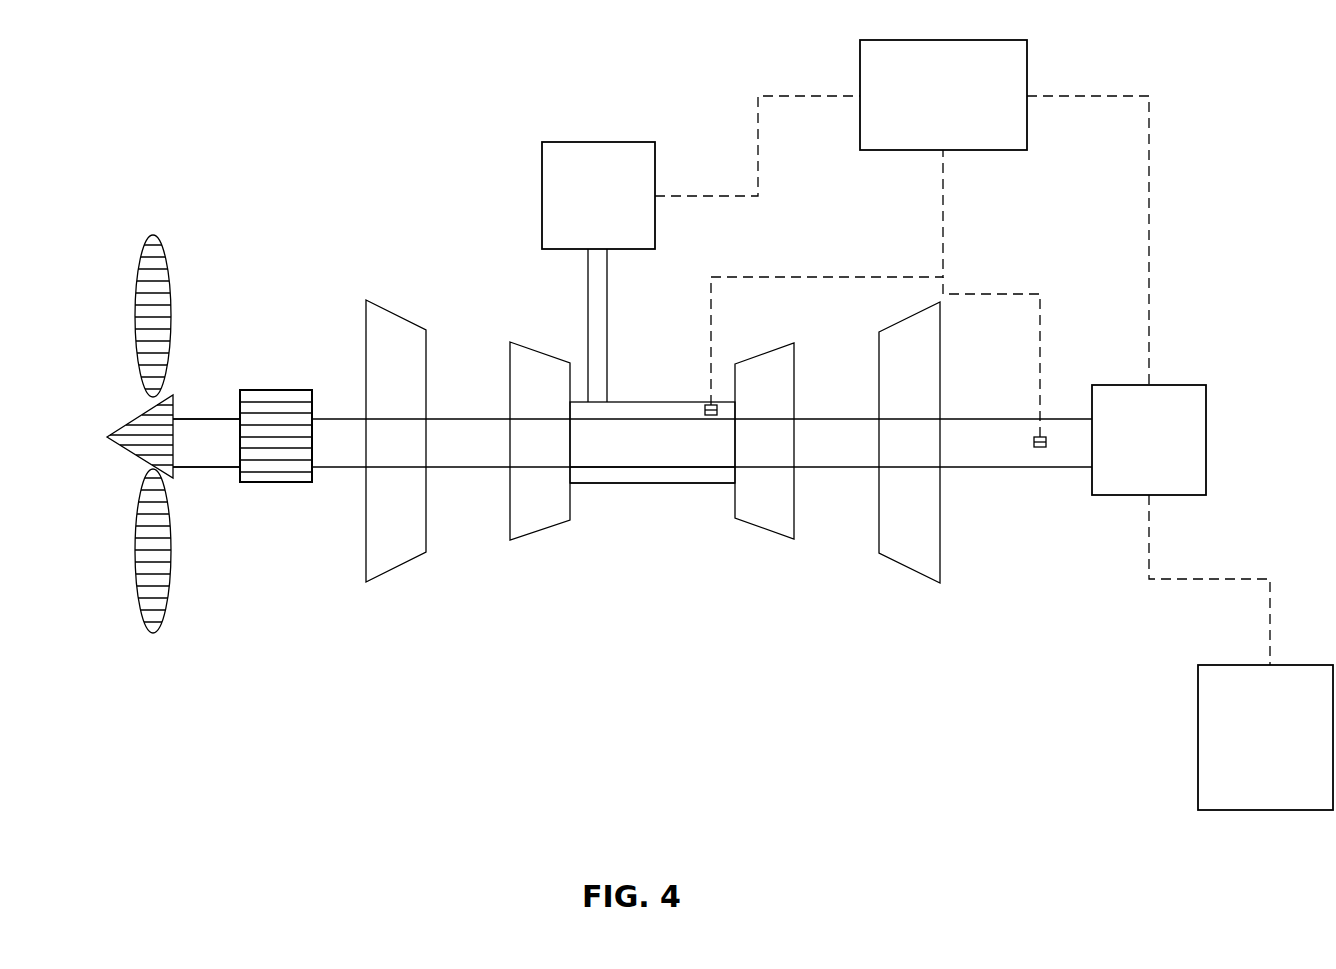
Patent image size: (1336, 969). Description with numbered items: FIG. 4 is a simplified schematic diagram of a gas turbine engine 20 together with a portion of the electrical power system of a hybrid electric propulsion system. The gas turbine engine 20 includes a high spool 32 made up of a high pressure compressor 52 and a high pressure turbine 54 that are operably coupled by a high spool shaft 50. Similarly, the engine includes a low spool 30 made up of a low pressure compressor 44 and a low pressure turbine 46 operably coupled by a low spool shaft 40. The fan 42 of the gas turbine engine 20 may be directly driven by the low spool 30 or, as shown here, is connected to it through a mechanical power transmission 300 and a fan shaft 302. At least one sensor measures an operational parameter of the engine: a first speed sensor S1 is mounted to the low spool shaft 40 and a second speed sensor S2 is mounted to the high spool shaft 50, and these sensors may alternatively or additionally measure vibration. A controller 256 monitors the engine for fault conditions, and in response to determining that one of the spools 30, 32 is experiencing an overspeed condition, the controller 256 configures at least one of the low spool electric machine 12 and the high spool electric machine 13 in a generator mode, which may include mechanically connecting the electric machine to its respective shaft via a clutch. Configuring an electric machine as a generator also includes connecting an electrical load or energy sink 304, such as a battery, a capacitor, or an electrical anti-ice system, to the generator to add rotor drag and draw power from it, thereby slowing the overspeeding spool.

The gas turbine engine 20 is at (128, 72).
The fan 42 is at (148, 312).
The fan shaft 302 is at (222, 435).
The mechanical power transmission 300 is at (285, 468).
The low pressure compressor 44 is at (383, 343).
The high pressure compressor 52 is at (528, 375).
The low spool 30 is at (470, 560).
The high spool 32 is at (583, 535).
The low spool shaft 40 is at (660, 450).
The high spool shaft 50 is at (683, 472).
The high pressure turbine 54 is at (778, 517).
The low pressure turbine 46 is at (910, 535).
The second sensor S2 is at (707, 405).
The first sensor S1 is at (1040, 455).
The high spool electric machine 13 is at (614, 213).
The controller 256 is at (969, 111).
The low spool electric machine 12 is at (1165, 461).
The electrical load or energy sink 304 is at (1296, 756).